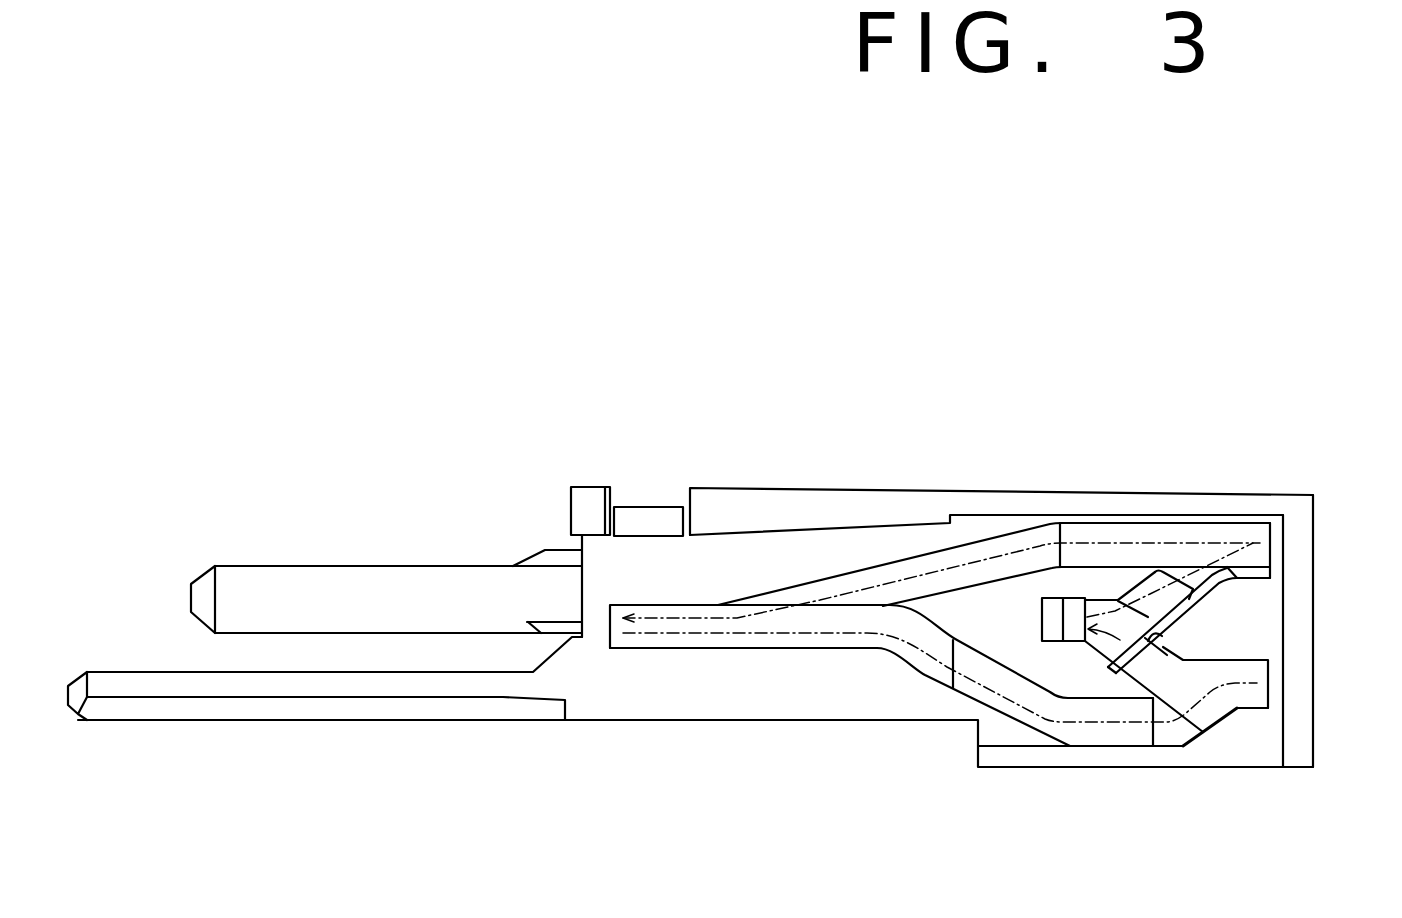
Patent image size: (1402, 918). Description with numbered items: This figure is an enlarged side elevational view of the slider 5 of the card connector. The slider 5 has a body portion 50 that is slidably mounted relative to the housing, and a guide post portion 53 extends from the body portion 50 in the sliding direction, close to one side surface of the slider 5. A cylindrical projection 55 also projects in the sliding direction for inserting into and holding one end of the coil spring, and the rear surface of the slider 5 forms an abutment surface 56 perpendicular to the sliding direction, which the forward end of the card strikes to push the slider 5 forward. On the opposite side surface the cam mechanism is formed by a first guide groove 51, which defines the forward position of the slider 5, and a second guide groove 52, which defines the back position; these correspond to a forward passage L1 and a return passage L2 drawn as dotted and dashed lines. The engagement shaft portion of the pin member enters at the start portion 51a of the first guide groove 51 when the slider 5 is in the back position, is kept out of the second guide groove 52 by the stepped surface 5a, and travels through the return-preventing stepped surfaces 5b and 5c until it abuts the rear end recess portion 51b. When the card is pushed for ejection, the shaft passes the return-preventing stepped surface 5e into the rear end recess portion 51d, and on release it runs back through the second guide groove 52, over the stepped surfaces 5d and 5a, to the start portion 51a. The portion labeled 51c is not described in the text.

The slider 5 is at (858, 490).
The stepped surface 5a is at (818, 607).
The return-preventing stepped surface 5b is at (952, 668).
The return-preventing stepped surface 5c is at (1189, 738).
The stepped surface 5d is at (1132, 542).
The return-preventing stepped surface 5e is at (1238, 586).
The body portion 50 is at (975, 635).
The first guide groove 51 is at (1004, 715).
The start portion 51a is at (750, 685).
The rear end recess portion 51b is at (1270, 697).
The connecting block portion 51c is at (1042, 616).
The rear end recess portion 51d is at (1273, 533).
The second guide groove 52 is at (1007, 550).
The guide post portion 53 is at (323, 705).
The cylindrical projection 55 is at (318, 587).
The abutment surface 56 is at (1317, 643).
The forward passage L1 is at (1068, 722).
The return passage L2 is at (1082, 542).